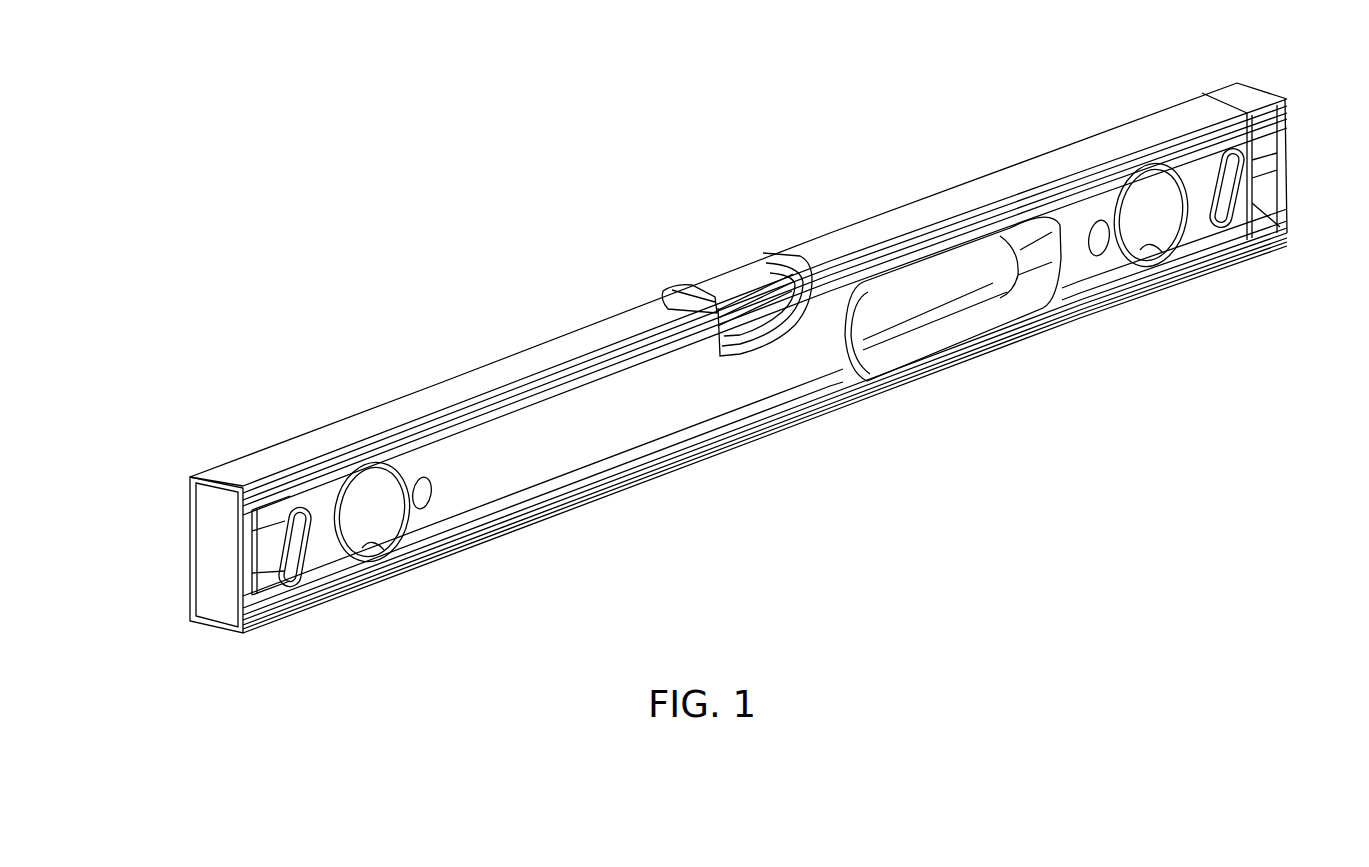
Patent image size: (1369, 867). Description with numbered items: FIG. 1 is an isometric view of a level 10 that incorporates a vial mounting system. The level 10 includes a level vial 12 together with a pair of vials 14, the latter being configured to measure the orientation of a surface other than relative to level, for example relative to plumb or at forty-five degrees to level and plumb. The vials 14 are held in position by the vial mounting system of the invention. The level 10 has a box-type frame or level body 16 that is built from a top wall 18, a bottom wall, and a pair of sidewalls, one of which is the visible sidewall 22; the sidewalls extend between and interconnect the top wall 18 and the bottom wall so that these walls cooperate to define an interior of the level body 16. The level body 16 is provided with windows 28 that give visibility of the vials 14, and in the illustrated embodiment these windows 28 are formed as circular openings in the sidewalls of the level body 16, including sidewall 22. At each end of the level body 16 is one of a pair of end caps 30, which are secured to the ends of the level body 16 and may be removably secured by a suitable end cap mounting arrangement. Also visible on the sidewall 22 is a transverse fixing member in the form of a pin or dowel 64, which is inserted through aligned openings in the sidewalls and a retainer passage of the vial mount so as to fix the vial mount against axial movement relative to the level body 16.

The level 10 is at (733, 368).
The level vial 12 is at (738, 259).
The vials 14 is at (381, 493).
The level body 16 is at (738, 358).
The top wall 18 is at (472, 390).
The sidewall 22 is at (604, 456).
The windows 28 is at (363, 572).
The end caps 30 is at (186, 610).
The pin or dowel 64 is at (430, 510).